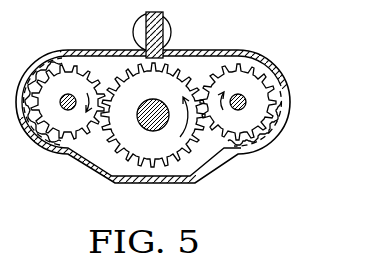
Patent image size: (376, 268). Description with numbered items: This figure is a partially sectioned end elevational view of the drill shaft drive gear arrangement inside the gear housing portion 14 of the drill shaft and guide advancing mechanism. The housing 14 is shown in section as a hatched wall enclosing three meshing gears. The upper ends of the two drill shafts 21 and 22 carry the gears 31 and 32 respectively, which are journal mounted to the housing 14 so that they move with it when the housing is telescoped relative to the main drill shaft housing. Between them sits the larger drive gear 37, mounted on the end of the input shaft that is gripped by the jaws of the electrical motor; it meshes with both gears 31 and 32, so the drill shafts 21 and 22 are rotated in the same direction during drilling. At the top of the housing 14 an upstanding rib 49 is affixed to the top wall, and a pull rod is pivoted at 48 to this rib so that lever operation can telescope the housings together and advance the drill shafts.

The gear housing portion 14 is at (226, 52).
The drill shaft section 21 is at (39, 133).
The drill shaft section 22 is at (247, 103).
The gear 31 is at (72, 125).
The gear 32 is at (256, 80).
The drive gear 37 is at (168, 80).
The pivot 48 is at (136, 31).
The upstanding rib 49 is at (171, 26).